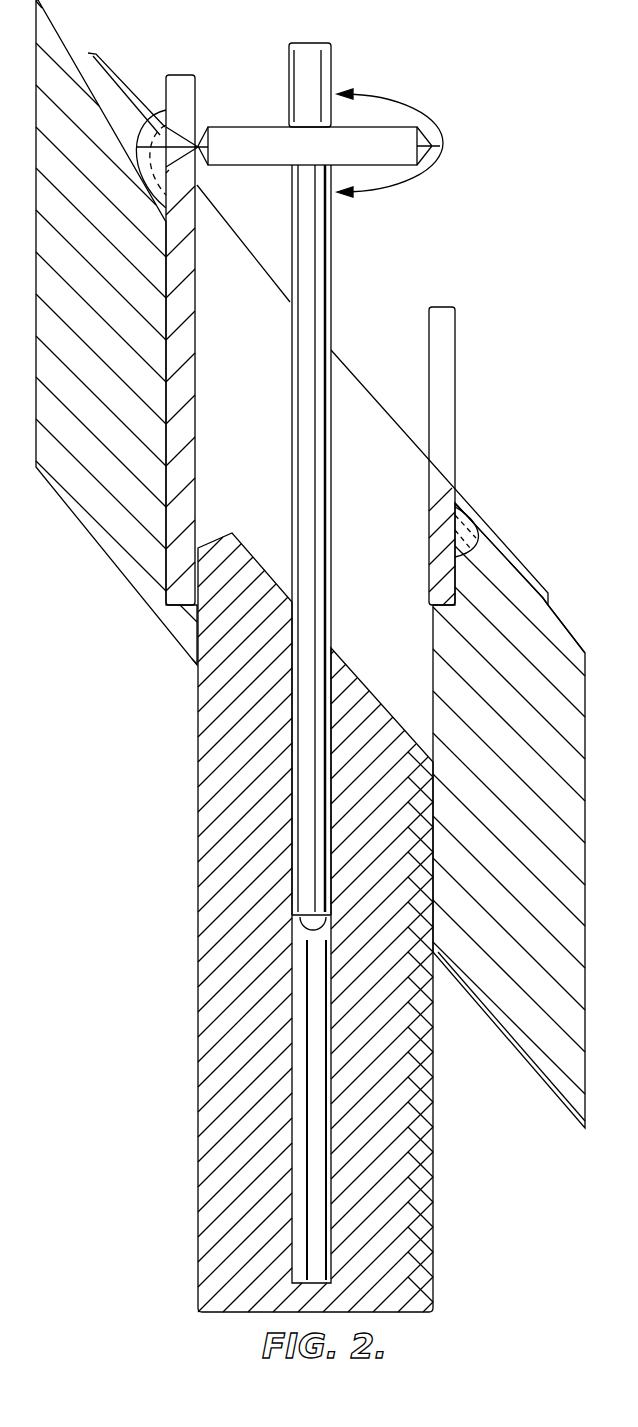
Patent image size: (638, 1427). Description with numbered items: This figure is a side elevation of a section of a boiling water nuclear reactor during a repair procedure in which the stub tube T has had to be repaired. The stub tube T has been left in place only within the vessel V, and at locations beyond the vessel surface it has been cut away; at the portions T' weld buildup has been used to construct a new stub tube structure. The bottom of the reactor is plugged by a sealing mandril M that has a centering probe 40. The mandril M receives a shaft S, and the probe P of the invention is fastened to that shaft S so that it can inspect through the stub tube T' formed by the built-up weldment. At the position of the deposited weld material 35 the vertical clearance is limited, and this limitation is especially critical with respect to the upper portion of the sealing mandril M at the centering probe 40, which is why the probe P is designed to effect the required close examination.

The probe P is at (423, 130).
The shaft S is at (332, 310).
The stub tube T is at (296, 340).
The weld buildup portions T' is at (318, 326).
The deposited weld material 35 is at (437, 466).
The centering probe 40 is at (233, 533).
The tapered body V is at (508, 650).
The sealing mandril M is at (198, 908).